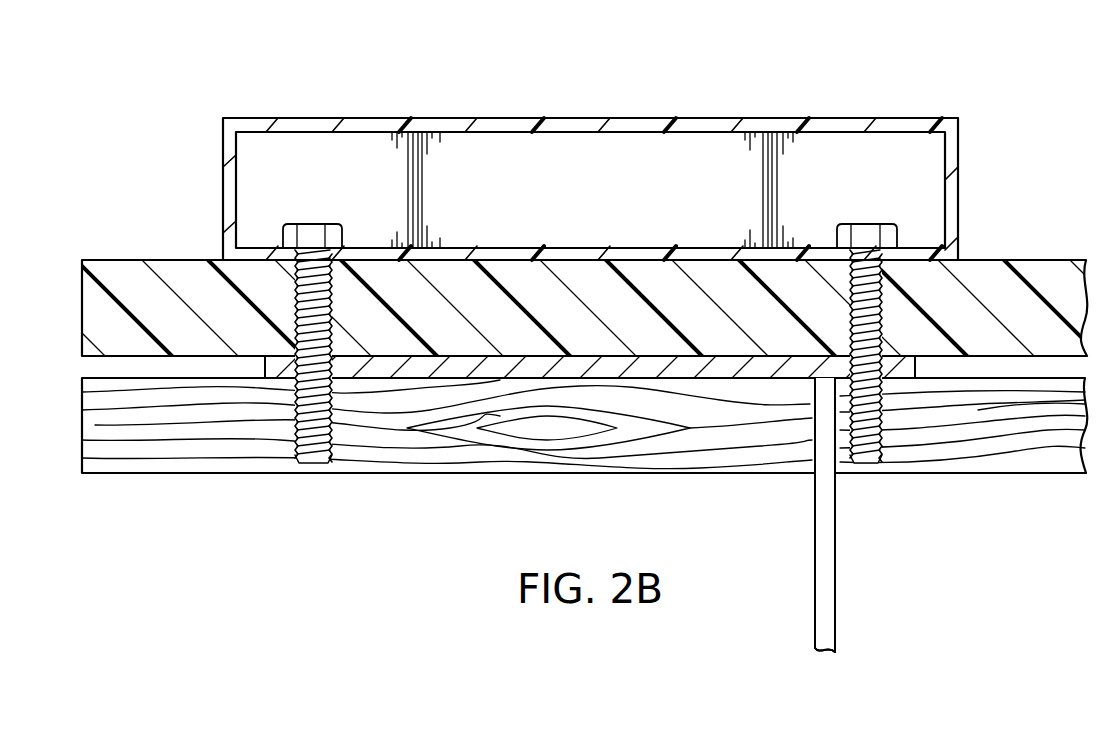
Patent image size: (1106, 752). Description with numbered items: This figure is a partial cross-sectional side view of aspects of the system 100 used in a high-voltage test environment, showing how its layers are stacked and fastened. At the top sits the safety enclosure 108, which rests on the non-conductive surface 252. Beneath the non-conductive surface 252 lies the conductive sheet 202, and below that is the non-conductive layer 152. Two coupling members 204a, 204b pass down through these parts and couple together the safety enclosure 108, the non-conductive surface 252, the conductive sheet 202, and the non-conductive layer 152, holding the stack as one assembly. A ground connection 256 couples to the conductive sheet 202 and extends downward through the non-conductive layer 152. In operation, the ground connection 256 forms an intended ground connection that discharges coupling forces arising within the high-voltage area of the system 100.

The system 100 is at (320, 62).
The safety enclosure 108 is at (504, 108).
The non-conductive layer 152 is at (182, 482).
The conductive sheet 202 is at (716, 366).
The coupling member 204a is at (313, 465).
The coupling member 204b is at (870, 465).
The non-conductive surface 252 is at (183, 259).
The ground connection 256 is at (852, 588).